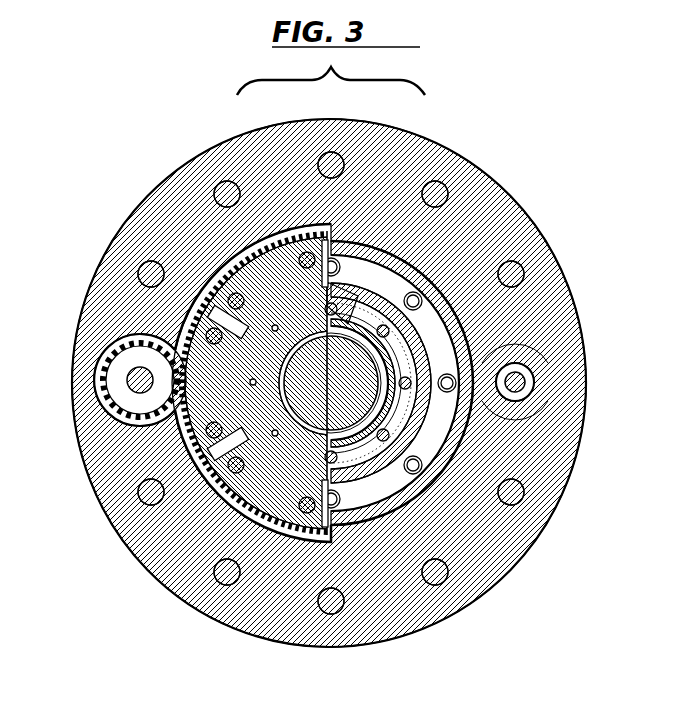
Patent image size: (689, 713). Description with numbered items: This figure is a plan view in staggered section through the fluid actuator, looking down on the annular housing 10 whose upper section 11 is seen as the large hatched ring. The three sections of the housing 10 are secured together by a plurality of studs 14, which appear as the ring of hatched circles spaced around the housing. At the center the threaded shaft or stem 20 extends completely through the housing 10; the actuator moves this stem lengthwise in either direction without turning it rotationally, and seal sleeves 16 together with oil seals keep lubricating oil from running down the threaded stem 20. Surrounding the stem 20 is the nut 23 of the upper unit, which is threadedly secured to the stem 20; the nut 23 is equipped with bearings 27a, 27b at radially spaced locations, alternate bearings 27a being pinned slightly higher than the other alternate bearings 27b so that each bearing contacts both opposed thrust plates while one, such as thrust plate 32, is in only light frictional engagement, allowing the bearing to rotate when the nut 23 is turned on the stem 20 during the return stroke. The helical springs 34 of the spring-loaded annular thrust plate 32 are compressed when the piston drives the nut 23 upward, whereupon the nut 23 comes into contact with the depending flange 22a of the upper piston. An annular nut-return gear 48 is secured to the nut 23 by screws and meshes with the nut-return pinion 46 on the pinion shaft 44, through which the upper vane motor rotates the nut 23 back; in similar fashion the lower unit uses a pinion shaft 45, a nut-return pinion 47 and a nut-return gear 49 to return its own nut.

The annular housing 10 is at (331, 68).
The upper section 11 is at (102, 297).
The studs 14 is at (515, 578).
The seal sleeves 16 is at (352, 322).
The threaded shaft or stem 20 is at (367, 363).
The depending flange 22a is at (341, 396).
The nut 23 is at (280, 475).
The bearings 27a is at (312, 514).
The bearings 27b is at (232, 470).
The thrust plate 32 is at (387, 268).
The helical springs 34 is at (447, 392).
The pinion shaft 44 is at (137, 383).
The pinion shaft 45 is at (523, 382).
The nut-return pinion 46 is at (112, 382).
The nut-return pinion 47 is at (560, 354).
The annular nut-return gear 48 is at (190, 432).
The nut-return gear 49 is at (473, 428).